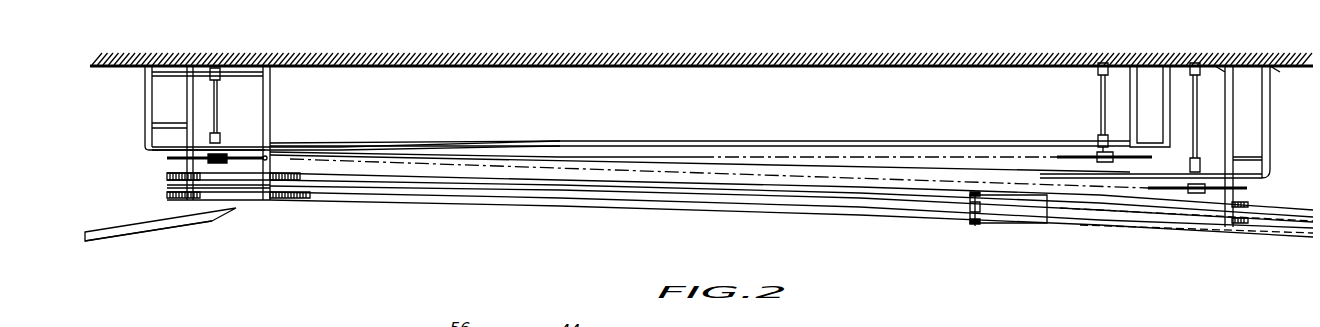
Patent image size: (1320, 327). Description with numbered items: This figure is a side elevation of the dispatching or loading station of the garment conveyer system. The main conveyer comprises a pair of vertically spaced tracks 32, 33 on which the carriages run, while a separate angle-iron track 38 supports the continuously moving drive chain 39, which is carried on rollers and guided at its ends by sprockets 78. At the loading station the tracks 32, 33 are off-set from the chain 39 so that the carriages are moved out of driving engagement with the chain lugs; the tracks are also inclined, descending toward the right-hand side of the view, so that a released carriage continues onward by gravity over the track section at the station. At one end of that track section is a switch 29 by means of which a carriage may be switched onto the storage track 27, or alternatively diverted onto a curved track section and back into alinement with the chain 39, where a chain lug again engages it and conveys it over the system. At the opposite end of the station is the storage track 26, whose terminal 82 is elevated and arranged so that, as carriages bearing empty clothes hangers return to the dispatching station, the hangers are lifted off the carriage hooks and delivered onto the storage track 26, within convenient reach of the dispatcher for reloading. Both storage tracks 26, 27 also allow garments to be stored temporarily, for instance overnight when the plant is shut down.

The storage track 26 is at (118, 236).
The storage track 27 is at (1303, 228).
The switch 29 is at (1023, 200).
The track 32 is at (604, 189).
The track 33 is at (848, 211).
The angle iron track 38 is at (723, 143).
The drive chain 39 is at (500, 163).
The sprocket 78 is at (167, 160).
The terminal 82 is at (234, 210).